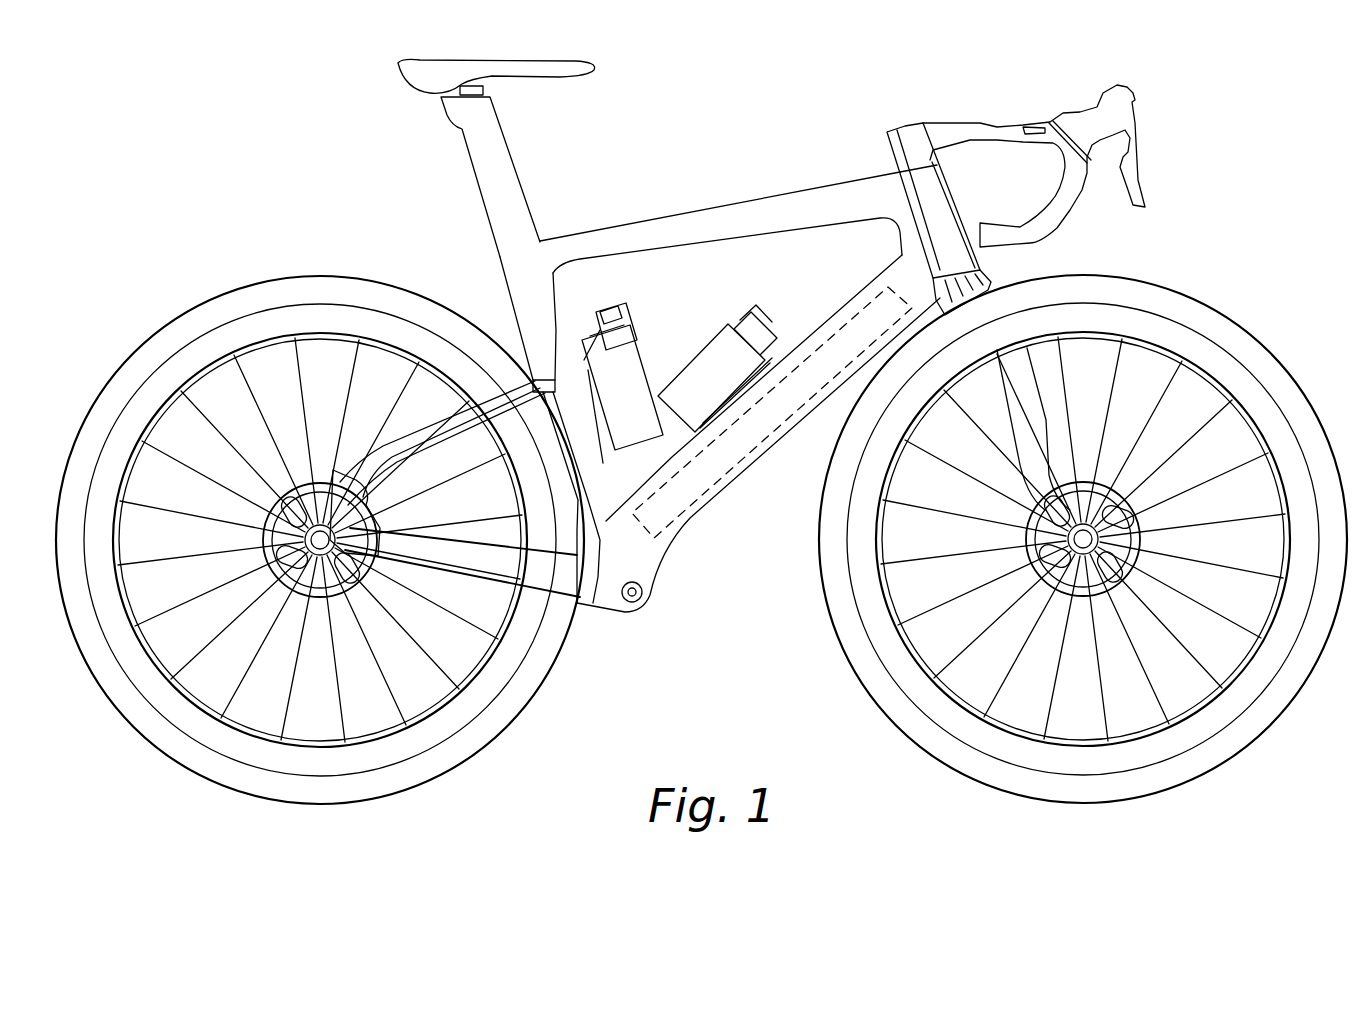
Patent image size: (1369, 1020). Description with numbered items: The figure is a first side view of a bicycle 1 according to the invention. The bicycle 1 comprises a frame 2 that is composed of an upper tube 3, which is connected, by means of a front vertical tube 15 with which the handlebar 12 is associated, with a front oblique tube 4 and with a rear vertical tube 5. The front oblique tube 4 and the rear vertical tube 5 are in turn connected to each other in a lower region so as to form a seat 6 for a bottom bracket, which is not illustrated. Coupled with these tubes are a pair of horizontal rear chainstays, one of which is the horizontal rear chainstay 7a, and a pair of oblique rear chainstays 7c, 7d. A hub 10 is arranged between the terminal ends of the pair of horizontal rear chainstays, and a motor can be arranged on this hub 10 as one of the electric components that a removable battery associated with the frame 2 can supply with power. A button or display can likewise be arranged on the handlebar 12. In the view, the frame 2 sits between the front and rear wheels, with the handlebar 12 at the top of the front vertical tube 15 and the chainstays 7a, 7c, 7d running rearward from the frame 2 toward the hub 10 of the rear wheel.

The bicycle 1 is at (292, 152).
The frame 2 is at (708, 200).
The upper tube 3 is at (800, 207).
The front oblique tube 4 is at (850, 305).
The rear vertical tube 5 is at (530, 282).
The seat for a bottom bracket 6 is at (635, 595).
The horizontal rear chainstay 7a is at (493, 590).
The oblique rear chainstay 7c is at (408, 443).
The oblique rear chainstay 7d is at (553, 378).
The hub 10 is at (315, 745).
The handlebar 12 is at (980, 118).
The front vertical tube 15 is at (952, 197).